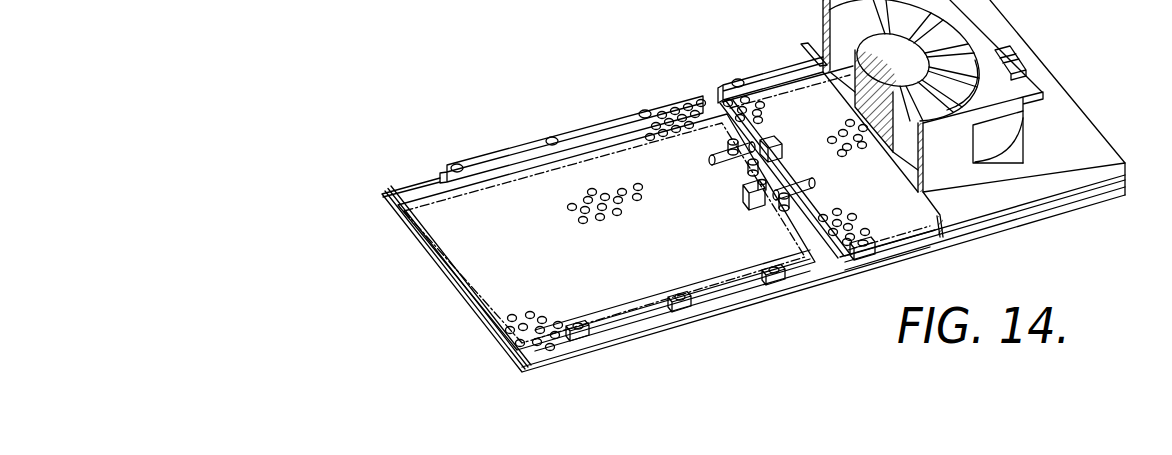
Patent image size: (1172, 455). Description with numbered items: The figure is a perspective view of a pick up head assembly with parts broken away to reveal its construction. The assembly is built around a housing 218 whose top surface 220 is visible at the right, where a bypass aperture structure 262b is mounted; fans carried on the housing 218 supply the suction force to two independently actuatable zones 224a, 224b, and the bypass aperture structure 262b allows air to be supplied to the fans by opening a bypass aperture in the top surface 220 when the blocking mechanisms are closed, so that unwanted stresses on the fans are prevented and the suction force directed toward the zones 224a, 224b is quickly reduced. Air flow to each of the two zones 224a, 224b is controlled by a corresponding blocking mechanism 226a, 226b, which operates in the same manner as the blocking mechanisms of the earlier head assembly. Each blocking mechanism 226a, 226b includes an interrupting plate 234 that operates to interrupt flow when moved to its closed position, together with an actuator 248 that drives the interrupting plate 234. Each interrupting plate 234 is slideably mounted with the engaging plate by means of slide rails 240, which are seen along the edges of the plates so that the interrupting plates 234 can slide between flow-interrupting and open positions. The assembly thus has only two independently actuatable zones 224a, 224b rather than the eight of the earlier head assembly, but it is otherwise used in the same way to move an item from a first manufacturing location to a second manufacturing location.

The housing 218 is at (1075, 196).
The top surface of the housing 220 is at (1078, 128).
The first independently actuatable zone 224a is at (718, 319).
The second independently actuatable zone 224b is at (1054, 229).
The first blocking mechanism 226a is at (537, 181).
The second blocking mechanism 226b is at (801, 96).
The interrupting plate 234 is at (437, 233).
The slide rails 240 is at (643, 311).
The actuator 248 is at (735, 147).
The bypass aperture structure 262b is at (1014, 53).